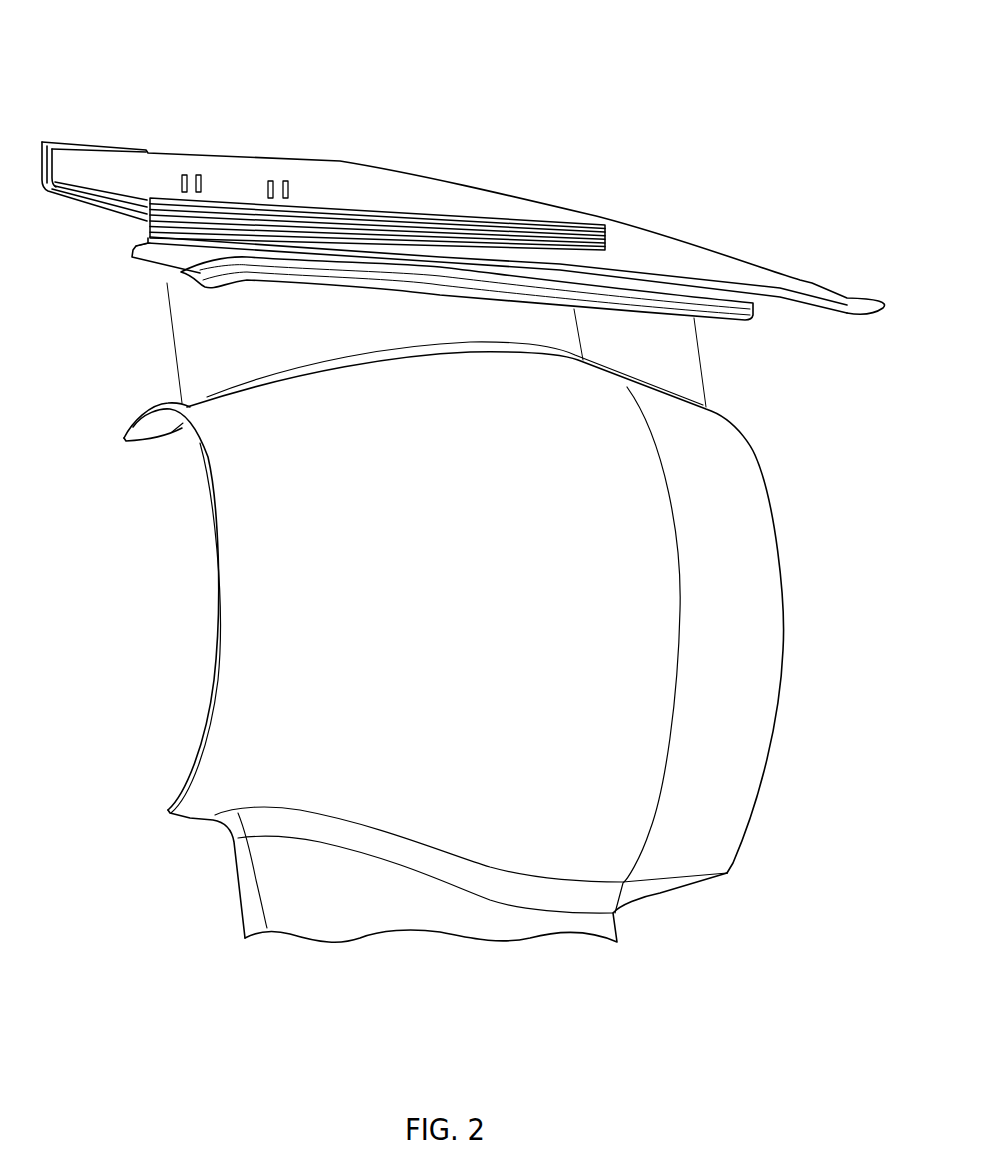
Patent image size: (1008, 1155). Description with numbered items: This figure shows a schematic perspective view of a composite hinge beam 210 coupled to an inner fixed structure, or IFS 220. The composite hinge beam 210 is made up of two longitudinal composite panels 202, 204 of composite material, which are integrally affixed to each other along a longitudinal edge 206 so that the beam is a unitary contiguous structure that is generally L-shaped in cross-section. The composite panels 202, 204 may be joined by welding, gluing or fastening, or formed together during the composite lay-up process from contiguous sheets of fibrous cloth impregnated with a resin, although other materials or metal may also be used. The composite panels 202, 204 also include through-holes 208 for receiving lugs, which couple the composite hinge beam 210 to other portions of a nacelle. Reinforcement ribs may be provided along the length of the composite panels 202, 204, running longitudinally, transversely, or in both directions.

The composite hinge beam 210 is at (100, 105).
The composite panel 202 is at (633, 223).
The composite panel 204 is at (153, 263).
The longitudinal edge 206 is at (688, 280).
The through-holes 208 is at (289, 181).
The inner fixed structure (IFS) 220 is at (783, 645).